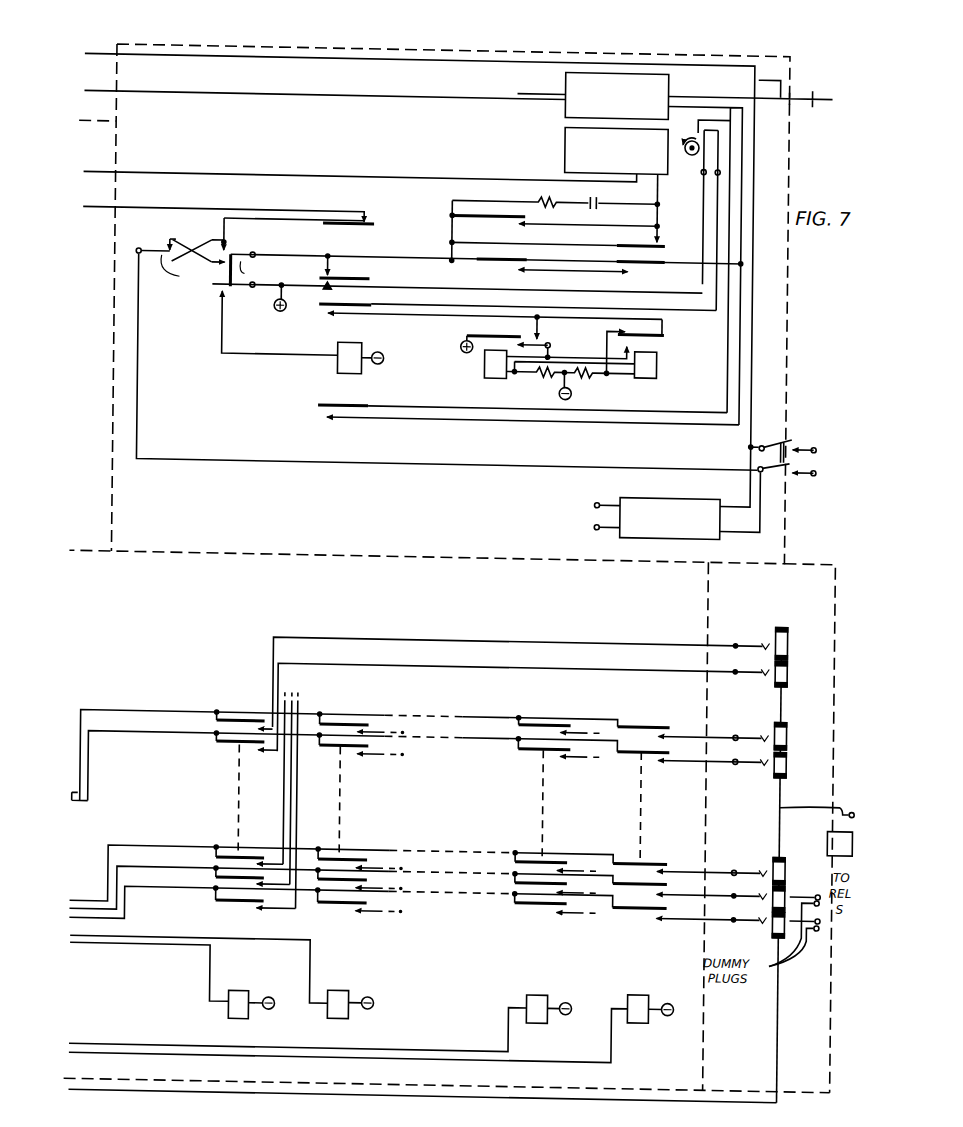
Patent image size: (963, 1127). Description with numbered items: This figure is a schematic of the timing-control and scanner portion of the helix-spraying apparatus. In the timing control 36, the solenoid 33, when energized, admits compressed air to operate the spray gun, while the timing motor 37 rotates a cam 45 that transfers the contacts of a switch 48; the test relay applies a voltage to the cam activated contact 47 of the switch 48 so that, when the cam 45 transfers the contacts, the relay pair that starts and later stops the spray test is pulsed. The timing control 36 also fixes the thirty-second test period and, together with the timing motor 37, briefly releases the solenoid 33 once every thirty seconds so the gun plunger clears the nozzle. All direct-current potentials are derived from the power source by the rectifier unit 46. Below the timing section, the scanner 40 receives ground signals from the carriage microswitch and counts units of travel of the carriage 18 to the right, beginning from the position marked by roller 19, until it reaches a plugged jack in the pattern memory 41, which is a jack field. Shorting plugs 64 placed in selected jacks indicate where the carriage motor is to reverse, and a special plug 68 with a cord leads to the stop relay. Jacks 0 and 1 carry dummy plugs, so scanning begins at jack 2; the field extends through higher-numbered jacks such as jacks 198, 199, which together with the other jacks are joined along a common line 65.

The solenoid 33 is at (569, 99).
The timing motor 37 is at (569, 136).
The switch 48 is at (714, 121).
The cam activated contact 47 is at (703, 120).
The cam 45 is at (696, 143).
The rectifier unit 46 is at (652, 493).
The timing control 36 is at (468, 304).
The scanner circuit 40 is at (235, 650).
The pattern memory 41 is at (802, 622).
The shorting plug 64 is at (779, 804).
The special plug 68 is at (839, 844).
The common return line 65 is at (789, 1000).
The jack 199 is at (534, 678).
The jack 198 is at (534, 706).
The roller 19 is at (442, 754).
The carriage 18 is at (446, 766).
The jack number 2 is at (433, 872).
The jack number 1 is at (431, 887).
The jack number 0 is at (431, 909).